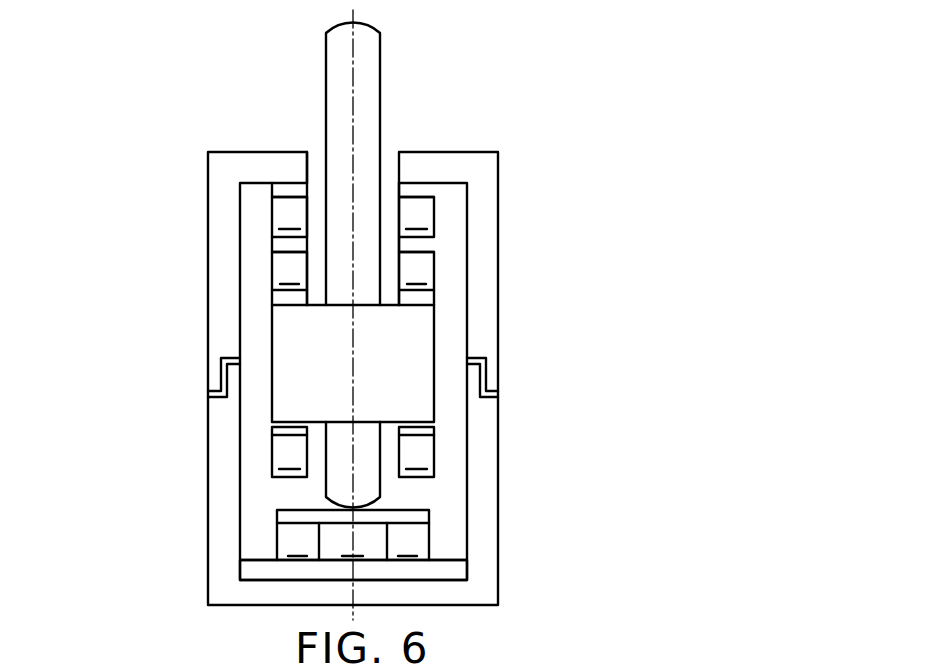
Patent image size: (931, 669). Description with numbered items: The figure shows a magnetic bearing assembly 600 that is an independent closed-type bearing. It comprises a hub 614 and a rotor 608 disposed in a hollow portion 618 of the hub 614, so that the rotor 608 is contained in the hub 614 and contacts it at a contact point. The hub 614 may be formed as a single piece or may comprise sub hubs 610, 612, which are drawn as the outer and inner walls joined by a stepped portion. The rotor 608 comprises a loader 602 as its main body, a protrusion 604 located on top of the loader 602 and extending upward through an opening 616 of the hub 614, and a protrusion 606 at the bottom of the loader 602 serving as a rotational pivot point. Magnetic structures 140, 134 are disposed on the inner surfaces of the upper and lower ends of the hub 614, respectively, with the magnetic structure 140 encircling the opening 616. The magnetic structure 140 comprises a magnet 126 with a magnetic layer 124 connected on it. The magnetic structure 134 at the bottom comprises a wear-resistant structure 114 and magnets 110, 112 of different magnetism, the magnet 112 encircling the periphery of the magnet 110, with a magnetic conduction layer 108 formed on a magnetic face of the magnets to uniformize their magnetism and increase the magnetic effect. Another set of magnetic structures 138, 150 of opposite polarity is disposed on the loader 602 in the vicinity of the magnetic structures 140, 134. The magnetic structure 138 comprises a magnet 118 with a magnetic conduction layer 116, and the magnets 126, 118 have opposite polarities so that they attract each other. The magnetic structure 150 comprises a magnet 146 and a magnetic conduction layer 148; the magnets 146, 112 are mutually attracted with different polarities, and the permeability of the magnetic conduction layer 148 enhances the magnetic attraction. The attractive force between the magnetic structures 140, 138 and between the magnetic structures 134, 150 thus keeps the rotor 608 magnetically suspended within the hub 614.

The magnetic bearing assembly 600 is at (90, 40).
The loader 602 is at (285, 346).
The protrusion 604 is at (335, 241).
The protrusion 606 is at (335, 493).
The rotor 608 is at (98, 228).
The sub hub 610 is at (488, 340).
The sub hub 612 is at (488, 405).
The hub 614 is at (574, 325).
The opening 616 is at (309, 165).
The hollow portion 618 is at (240, 494).
The magnetic layer 124 is at (432, 190).
The magnet 126 is at (432, 216).
The magnetic structure 140 is at (574, 178).
The magnet 118 is at (432, 266).
The magnetic conduction layer 116 is at (432, 297).
The magnetic structure 138 is at (574, 255).
The magnetic conduction layer 148 is at (432, 428).
The magnet 146 is at (432, 460).
The magnetic structure 150 is at (574, 415).
The wear-resistant structure 114 is at (428, 510).
The magnet 110 is at (430, 517).
The magnet 112 is at (428, 552).
The magnetic conduction layer 108 is at (433, 572).
The magnetic structure 134 is at (574, 490).